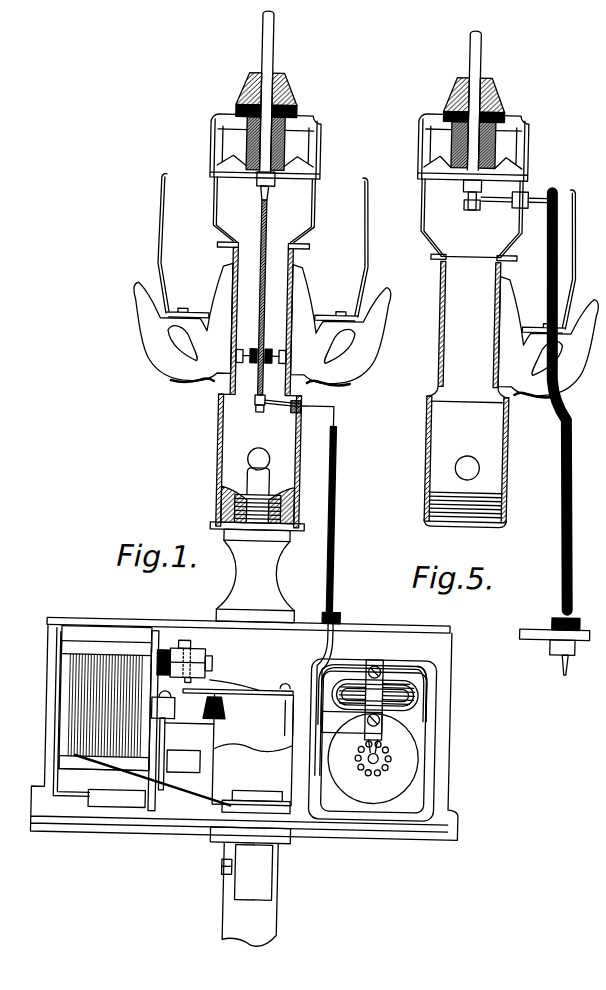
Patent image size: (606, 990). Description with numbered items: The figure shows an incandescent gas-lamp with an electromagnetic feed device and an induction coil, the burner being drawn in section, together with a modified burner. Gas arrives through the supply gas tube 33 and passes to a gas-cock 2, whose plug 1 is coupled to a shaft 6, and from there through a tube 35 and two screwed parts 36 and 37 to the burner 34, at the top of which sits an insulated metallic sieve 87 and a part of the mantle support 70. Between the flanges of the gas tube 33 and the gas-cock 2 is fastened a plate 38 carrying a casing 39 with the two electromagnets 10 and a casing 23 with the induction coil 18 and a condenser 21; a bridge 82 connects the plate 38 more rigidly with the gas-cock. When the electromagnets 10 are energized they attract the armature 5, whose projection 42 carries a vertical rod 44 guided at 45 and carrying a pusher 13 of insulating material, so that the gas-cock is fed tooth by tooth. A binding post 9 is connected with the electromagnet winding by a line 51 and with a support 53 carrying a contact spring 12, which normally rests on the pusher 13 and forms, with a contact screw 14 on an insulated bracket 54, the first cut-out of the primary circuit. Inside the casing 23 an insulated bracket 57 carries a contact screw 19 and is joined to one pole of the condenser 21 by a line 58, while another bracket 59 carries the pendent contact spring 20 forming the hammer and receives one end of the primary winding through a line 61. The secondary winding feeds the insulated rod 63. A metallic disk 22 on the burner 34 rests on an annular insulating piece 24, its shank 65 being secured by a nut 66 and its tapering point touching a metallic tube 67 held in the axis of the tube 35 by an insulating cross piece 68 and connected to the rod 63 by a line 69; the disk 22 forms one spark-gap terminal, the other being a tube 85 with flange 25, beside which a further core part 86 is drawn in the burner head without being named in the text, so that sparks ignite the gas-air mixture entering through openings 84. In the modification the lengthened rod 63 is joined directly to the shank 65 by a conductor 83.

In FIG. 1, the plug 1 is at (189, 753).
In FIG. 1, the gas-cock 2 is at (258, 745).
In FIG. 1, the armature 5 is at (142, 806).
In FIG. 1, the shaft 6 is at (200, 732).
In FIG. 1, the binding post 9 is at (258, 882).
In FIG. 1, the electromagnets 10 is at (72, 704).
In FIG. 1, the contact spring 12 is at (238, 692).
In FIG. 1, the pusher 13 is at (235, 708).
In FIG. 1, the contact screw 14 is at (192, 643).
In FIG. 1, the induction coil 18 is at (389, 792).
In FIG. 1, the contact screw 19 is at (405, 732).
In FIG. 1, the pendent contact spring 20 is at (421, 677).
In FIG. 1, the condenser 21 is at (425, 702).
In FIG. 1, the metallic disk 22 is at (276, 82).
In FIG. 5, the metallic disk 22 is at (492, 95).
In FIG. 1, the casing 23 is at (441, 778).
In FIG. 1, the annular piece 24 is at (288, 109).
In FIG. 5, the annular piece 24 is at (506, 119).
In FIG. 1, the flange 25 is at (225, 113).
In FIG. 5, the flange 25 is at (439, 119).
In FIG. 1, the supply gas tube 33 is at (280, 918).
In FIG. 1, the burner 34 is at (309, 209).
In FIG. 5, the burner 34 is at (436, 247).
In FIG. 1, the tube 35 is at (218, 419).
In FIG. 5, the tube 35 is at (431, 427).
In FIG. 1, the screwed part 36 is at (272, 505).
In FIG. 1, the screwed part 37 is at (256, 576).
In FIG. 1, the plate 38 is at (422, 825).
In FIG. 1, the casing 39 is at (70, 764).
In FIG. 1, the projection 42 is at (161, 812).
In FIG. 1, the vertical rod 44 is at (183, 761).
In FIG. 1, the guide 45 is at (170, 723).
In FIG. 1, the line 51 is at (152, 782).
In FIG. 1, the support 53 is at (304, 807).
In FIG. 1, the bracket 54 is at (184, 667).
In FIG. 1, the bracket 57 is at (352, 722).
In FIG. 1, the line 58 is at (358, 670).
In FIG. 1, the bracket 59 is at (380, 664).
In FIG. 1, the line 61 is at (424, 669).
In FIG. 1, the rod 63 is at (338, 418).
In FIG. 5, the rod 63 is at (574, 666).
In FIG. 1, the shank 65 is at (253, 168).
In FIG. 5, the shank 65 is at (469, 153).
In FIG. 1, the nut 66 is at (263, 176).
In FIG. 1, the metallic tube 67 is at (262, 297).
In FIG. 1, the cross piece 68 is at (252, 367).
In FIG. 1, the line 69 is at (310, 407).
In FIG. 1, the support for the incandescent mantle 70 is at (266, 29).
In FIG. 5, the support for the incandescent mantle 70 is at (478, 60).
In FIG. 1, the bridge 82 is at (93, 626).
In FIG. 5, the conductor 83 is at (498, 199).
In FIG. 1, the openings 84 is at (294, 471).
In FIG. 5, the openings 84 is at (468, 462).
In FIG. 1, the tube 85 is at (293, 144).
In FIG. 5, the tube 85 is at (500, 145).
In FIG. 1, the core 86 is at (322, 158).
In FIG. 5, the core 86 is at (446, 144).
In FIG. 1, the metallic sieve 87 is at (203, 124).